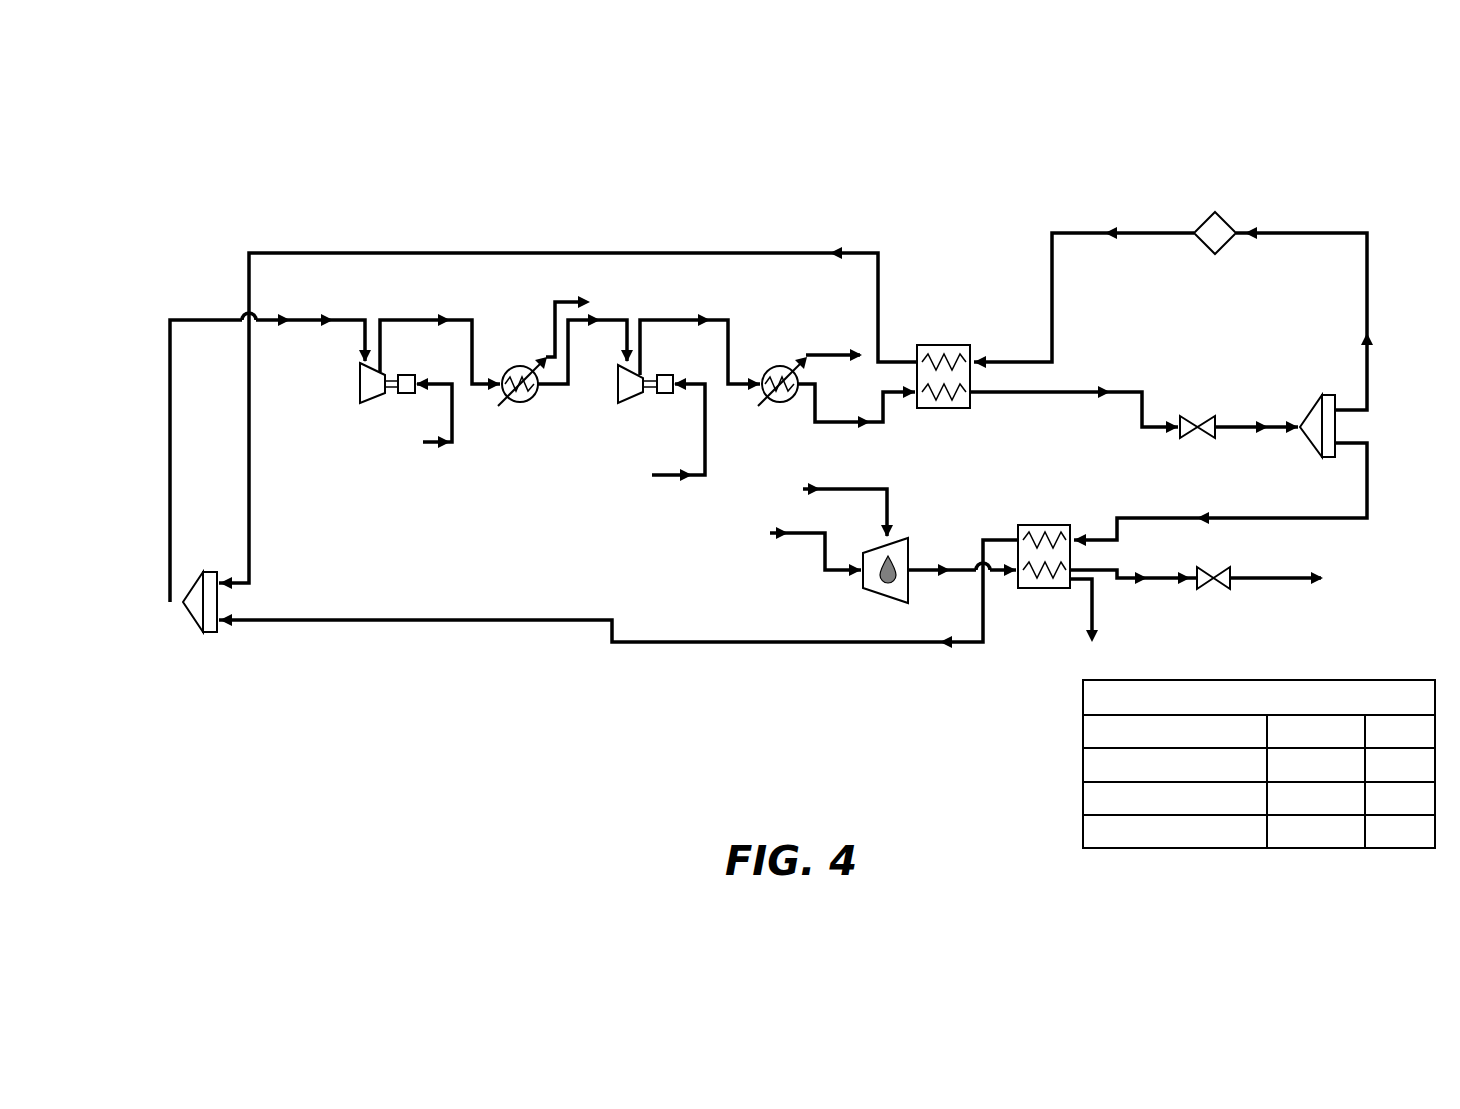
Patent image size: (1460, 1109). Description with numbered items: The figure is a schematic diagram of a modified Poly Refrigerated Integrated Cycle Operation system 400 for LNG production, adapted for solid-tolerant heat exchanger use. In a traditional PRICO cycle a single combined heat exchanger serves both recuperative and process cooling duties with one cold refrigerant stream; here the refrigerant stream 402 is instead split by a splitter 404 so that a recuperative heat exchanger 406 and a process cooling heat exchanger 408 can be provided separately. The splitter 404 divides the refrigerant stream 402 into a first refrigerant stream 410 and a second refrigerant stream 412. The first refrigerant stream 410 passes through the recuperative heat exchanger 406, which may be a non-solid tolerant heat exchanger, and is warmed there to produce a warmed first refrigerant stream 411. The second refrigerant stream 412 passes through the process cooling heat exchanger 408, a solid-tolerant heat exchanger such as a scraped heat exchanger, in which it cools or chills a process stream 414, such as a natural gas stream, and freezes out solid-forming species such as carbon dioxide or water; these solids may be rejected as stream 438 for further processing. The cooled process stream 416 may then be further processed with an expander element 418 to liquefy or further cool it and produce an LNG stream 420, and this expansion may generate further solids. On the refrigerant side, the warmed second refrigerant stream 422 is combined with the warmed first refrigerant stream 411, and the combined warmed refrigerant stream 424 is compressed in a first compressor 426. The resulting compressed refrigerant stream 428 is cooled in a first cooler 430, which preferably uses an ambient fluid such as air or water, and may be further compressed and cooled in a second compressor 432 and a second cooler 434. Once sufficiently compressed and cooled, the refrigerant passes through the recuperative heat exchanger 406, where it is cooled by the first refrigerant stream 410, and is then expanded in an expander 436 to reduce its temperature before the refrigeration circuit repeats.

The modified PRICO system 400 is at (566, 128).
The refrigerant stream 402 is at (1238, 424).
The splitter 404 is at (1318, 406).
The recuperative heat exchanger 406 is at (945, 345).
The process cooling heat exchanger 408 is at (1050, 525).
The first refrigerant stream 410 is at (1370, 290).
The warmed first refrigerant stream 411 is at (495, 253).
The second refrigerant stream 412 is at (1370, 485).
The process stream 414 is at (966, 568).
The cooled process stream 416 is at (1108, 576).
The expander element 418 is at (1221, 568).
The LNG stream 420 is at (1270, 590).
The warmed second refrigerant stream 422 is at (708, 642).
The combined warmed refrigerant stream 424 is at (170, 440).
The first compressor 426 is at (358, 383).
The compressed refrigerant stream 428 is at (418, 318).
The first cooler 430 is at (512, 367).
The second compressor 432 is at (614, 385).
The second cooler 434 is at (773, 367).
The expander 436 is at (1186, 415).
The solids stream 438 is at (1100, 617).